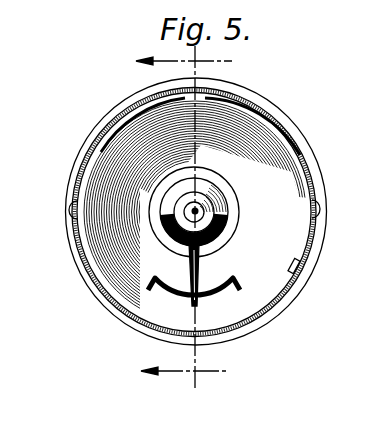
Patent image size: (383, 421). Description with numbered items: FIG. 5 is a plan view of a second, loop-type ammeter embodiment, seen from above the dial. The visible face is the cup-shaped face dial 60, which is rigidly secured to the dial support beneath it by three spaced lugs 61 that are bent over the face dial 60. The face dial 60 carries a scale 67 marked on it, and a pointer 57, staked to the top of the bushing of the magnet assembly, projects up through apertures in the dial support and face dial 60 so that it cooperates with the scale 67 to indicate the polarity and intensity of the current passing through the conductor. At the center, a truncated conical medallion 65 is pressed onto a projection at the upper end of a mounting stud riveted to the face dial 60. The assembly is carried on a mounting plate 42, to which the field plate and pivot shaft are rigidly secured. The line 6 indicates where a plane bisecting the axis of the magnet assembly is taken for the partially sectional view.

The line 6— 6 is at (173, 218).
The mounting plate 42 is at (263, 95).
The pointer 57 is at (199, 268).
The face dial 60 is at (272, 122).
The lugs 61 is at (297, 270).
The medallion 65 is at (216, 187).
The scale 67 is at (240, 282).